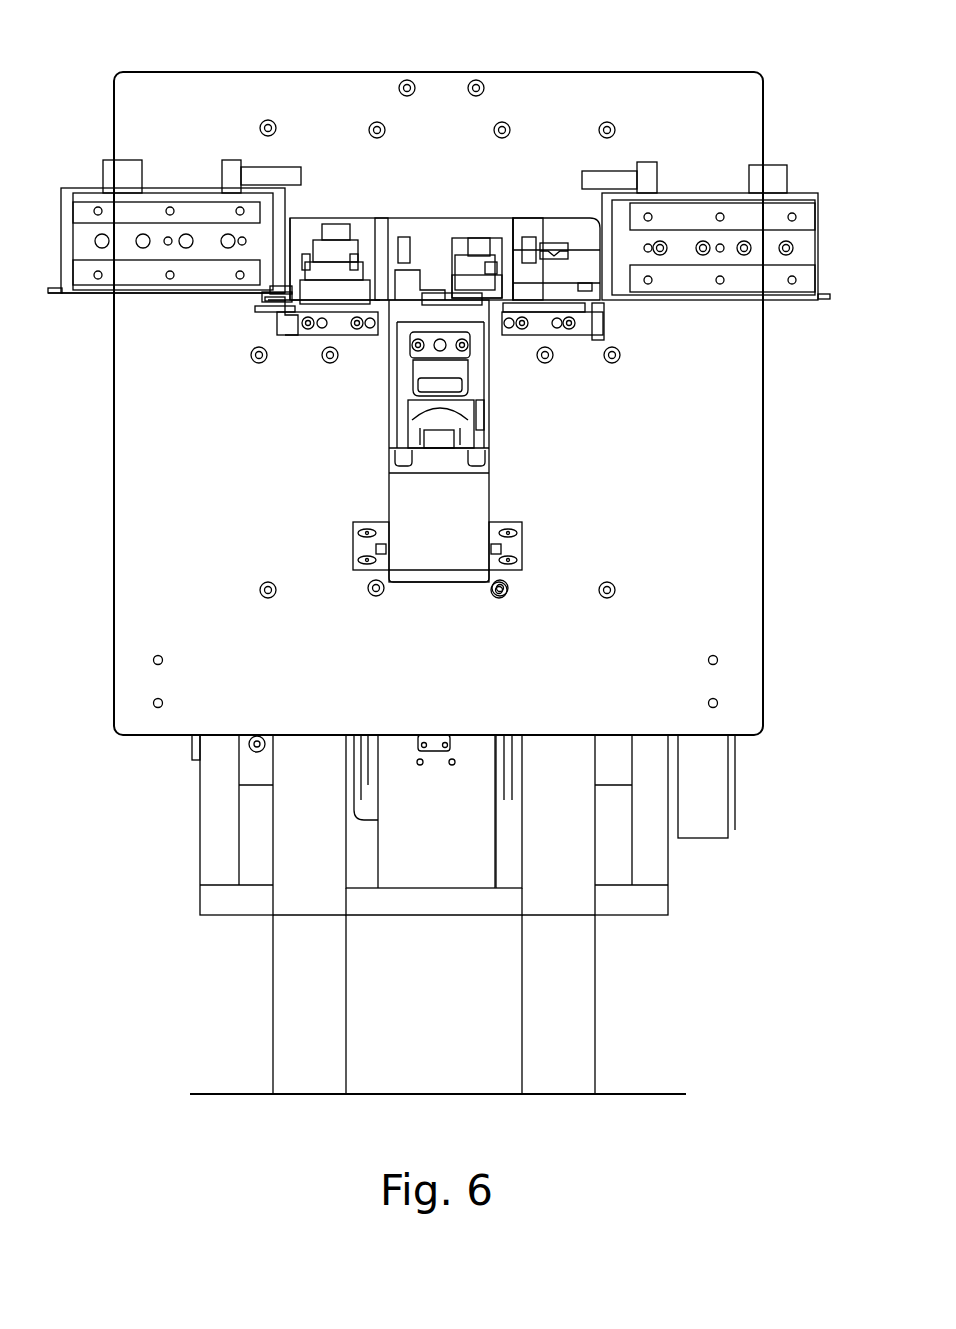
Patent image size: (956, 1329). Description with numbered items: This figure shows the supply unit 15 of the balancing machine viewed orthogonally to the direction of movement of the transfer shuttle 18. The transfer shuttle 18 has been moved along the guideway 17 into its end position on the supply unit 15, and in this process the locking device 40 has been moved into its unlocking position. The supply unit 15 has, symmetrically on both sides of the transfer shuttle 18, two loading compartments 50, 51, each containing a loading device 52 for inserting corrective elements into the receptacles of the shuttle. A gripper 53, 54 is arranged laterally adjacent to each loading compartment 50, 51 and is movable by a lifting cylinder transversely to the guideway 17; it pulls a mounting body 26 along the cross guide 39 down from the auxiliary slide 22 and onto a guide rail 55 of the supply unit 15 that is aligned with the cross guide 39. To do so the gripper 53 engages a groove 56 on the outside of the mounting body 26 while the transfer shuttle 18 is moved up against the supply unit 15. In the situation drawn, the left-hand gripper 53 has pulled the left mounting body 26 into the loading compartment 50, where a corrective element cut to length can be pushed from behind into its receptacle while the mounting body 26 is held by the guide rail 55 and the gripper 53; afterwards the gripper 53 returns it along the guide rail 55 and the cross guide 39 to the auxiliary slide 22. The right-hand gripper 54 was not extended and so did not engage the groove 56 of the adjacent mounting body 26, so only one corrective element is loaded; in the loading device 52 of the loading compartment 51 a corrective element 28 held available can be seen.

The supply unit 15 is at (222, 68).
The guideway 17 is at (480, 463).
The transfer shuttle 18 is at (486, 400).
The auxiliary slide 22 is at (405, 362).
The mounting body 26 is at (485, 250).
The corrective element 28 is at (570, 332).
The cross guide 39 is at (378, 240).
The locking device 40 is at (445, 292).
The loading compartment 50 is at (335, 235).
The loading compartment 51 is at (556, 232).
The loading device 52 is at (310, 230).
The gripper 53 is at (280, 250).
The gripper 54 is at (610, 270).
The guide rail 55 is at (363, 334).
The groove 56 is at (290, 305).